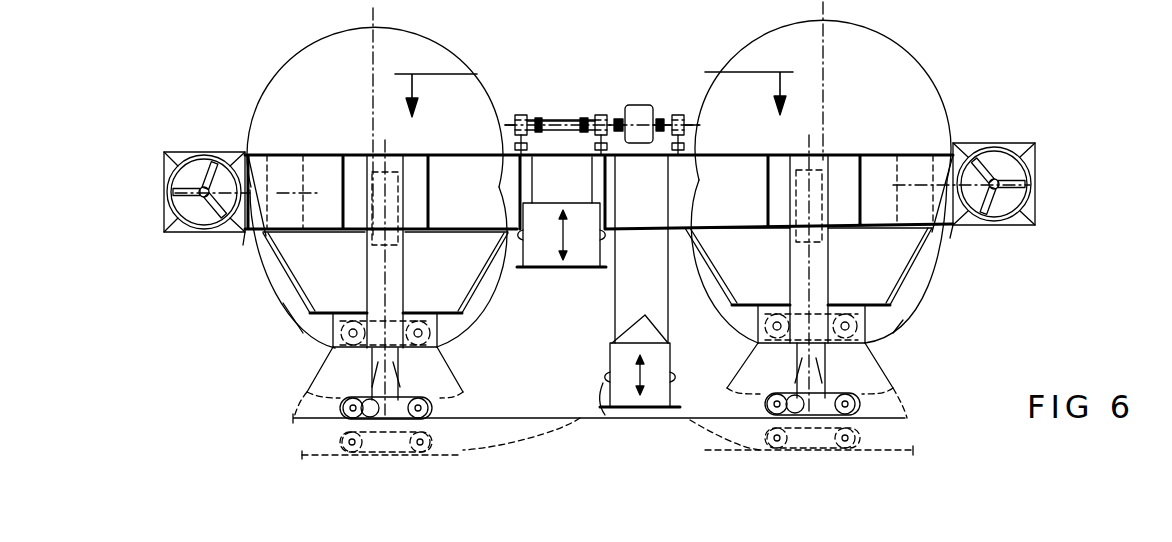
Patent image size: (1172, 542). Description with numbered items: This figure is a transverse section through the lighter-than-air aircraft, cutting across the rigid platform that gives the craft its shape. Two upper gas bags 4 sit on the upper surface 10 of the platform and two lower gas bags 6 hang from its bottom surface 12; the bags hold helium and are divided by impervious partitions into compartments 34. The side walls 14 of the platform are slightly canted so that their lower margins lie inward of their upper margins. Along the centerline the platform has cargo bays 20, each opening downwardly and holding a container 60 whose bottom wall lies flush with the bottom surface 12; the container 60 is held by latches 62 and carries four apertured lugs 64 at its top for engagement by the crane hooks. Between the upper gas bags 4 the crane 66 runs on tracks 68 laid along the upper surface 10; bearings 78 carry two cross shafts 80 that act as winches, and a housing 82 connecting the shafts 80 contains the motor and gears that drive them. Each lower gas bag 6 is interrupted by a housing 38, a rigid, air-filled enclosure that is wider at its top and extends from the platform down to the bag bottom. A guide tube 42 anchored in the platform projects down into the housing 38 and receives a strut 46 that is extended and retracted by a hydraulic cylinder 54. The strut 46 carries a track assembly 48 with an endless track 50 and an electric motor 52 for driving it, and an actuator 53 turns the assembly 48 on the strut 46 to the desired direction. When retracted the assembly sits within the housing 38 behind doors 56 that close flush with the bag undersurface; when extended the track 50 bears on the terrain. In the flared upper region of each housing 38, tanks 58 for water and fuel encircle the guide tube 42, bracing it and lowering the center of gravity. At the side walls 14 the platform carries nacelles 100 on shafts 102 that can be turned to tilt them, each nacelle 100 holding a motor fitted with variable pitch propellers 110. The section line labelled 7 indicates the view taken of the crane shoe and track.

The upper gas bag 4 is at (338, 35).
The lower gas bag 6 is at (296, 316).
The section line 7 is at (603, 95).
The upper surface 10 is at (425, 155).
The bottom surface 12 is at (642, 249).
The side wall 14 is at (282, 175).
The cargo bay 20 is at (530, 190).
The compartment 34 is at (392, 50).
The housing 38 is at (274, 264).
The guide tube 42 is at (367, 265).
The strut 46 is at (380, 362).
The track assembly 48 is at (432, 412).
The endless track 50 is at (342, 408).
The electric motor 52 is at (367, 418).
The actuator 53 is at (423, 418).
The hydraulic cylinder 54 is at (378, 192).
The door 56 is at (316, 375).
The tank 58 is at (317, 285).
The container 60 is at (538, 252).
The latch 62 is at (603, 383).
The apertured lug 64 is at (640, 347).
The crane 66 is at (605, 103).
The track 68 is at (513, 157).
The bearing 78 is at (518, 113).
The cross shaft 80 is at (566, 118).
The housing 82 is at (644, 105).
The nacelle 100 is at (232, 152).
The shaft 102 is at (243, 240).
The variable pitch propeller 110 is at (183, 206).